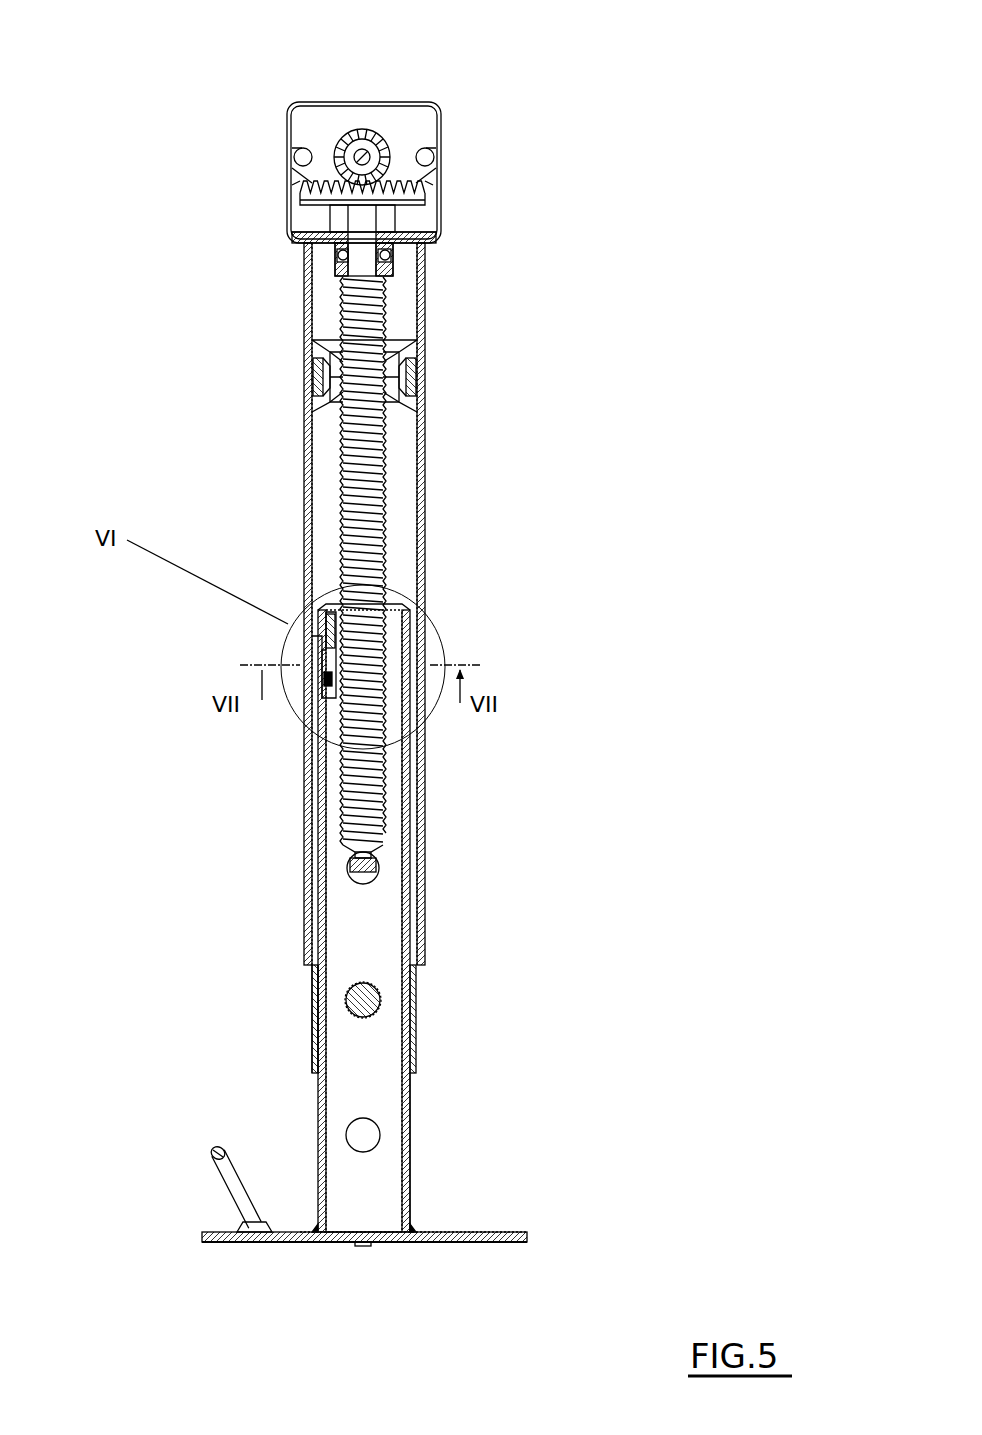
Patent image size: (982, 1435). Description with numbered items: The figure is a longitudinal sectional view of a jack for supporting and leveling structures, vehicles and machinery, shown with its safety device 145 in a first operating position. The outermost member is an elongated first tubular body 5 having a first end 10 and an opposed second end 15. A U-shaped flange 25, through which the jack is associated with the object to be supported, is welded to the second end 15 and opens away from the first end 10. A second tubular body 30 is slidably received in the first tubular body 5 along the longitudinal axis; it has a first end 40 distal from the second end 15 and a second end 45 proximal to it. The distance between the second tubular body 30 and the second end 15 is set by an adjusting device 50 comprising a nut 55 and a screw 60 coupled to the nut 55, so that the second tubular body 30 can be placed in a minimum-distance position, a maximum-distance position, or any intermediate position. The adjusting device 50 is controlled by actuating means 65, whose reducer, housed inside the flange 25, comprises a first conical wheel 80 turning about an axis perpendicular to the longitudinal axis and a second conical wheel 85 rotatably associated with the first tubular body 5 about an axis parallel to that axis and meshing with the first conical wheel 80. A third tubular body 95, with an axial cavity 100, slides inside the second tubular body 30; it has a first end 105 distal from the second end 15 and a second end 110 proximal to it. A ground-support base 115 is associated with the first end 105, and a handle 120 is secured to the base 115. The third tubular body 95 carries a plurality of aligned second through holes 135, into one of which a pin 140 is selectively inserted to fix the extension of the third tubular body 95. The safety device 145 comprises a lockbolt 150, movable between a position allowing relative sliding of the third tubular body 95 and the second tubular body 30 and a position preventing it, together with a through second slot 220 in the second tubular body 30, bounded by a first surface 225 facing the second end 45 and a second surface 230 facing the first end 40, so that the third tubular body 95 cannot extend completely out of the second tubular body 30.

The first tubular body 5 is at (420, 445).
The first end 10 is at (420, 960).
The second end 15 is at (425, 245).
The flange 25 is at (300, 118).
The second tubular body 30 is at (420, 792).
The first end 40 is at (413, 1065).
The second end 45 is at (408, 375).
The adjusting device 50 is at (407, 324).
The nut 55 is at (418, 342).
The screw 60 is at (350, 296).
The actuating means 65 is at (258, 151).
The first conical wheel 80 is at (348, 150).
The second conical wheel 85 is at (383, 178).
The third tubular body 95 is at (405, 1140).
The axial cavity 100 is at (372, 1177).
The first end 105 is at (316, 1224).
The second end 110 is at (413, 602).
The base 115 is at (215, 1237).
The handle 120 is at (235, 1182).
The second through holes 135 is at (345, 1115).
The pin 140 is at (405, 985).
The safety device 145 is at (287, 596).
The lockbolt 150 is at (305, 640).
The second slot 220 is at (285, 996).
The first surface 225 is at (312, 1010).
The second surface 230 is at (312, 993).